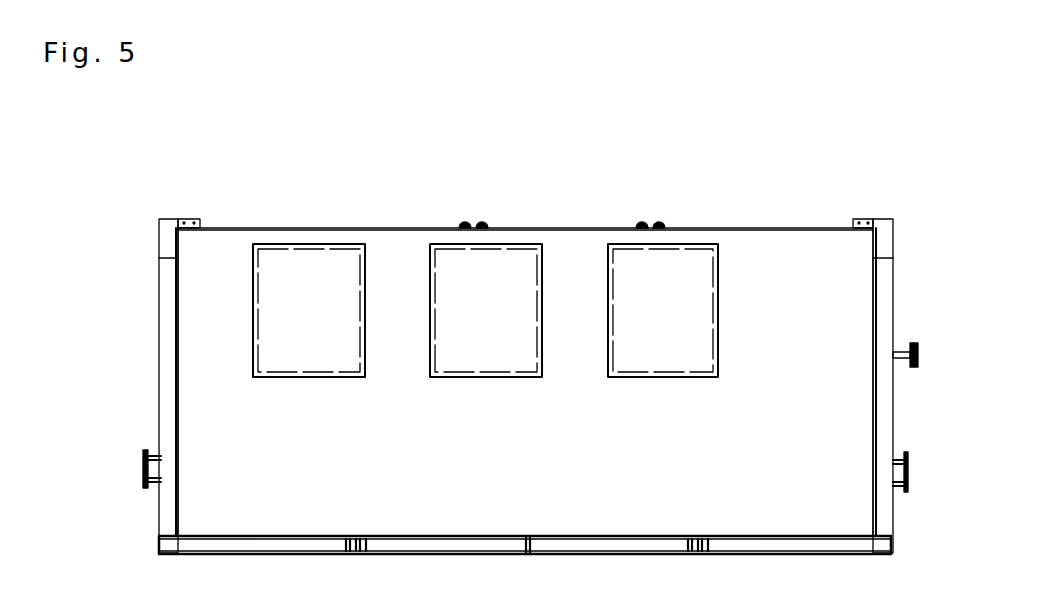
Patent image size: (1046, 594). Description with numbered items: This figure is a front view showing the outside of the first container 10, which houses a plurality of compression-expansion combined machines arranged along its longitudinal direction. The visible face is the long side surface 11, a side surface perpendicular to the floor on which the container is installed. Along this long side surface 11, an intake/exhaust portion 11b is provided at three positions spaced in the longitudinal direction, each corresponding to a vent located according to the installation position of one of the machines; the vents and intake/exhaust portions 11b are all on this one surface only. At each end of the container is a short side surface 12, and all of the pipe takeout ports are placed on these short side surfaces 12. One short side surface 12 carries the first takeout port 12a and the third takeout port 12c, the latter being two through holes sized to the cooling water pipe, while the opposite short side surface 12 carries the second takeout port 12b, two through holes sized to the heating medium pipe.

The first container 10 is at (333, 212).
The long side surface 11 is at (770, 257).
The intake/exhaust portion 11b is at (640, 255).
The short side surface 12 is at (161, 282).
The first takeout port 12a is at (900, 352).
The second takeout port 12b is at (147, 450).
The third takeout port 12c is at (893, 455).